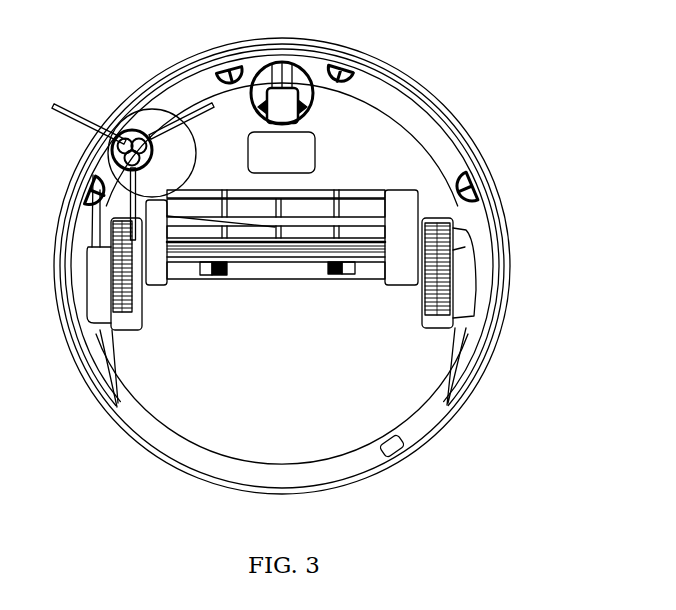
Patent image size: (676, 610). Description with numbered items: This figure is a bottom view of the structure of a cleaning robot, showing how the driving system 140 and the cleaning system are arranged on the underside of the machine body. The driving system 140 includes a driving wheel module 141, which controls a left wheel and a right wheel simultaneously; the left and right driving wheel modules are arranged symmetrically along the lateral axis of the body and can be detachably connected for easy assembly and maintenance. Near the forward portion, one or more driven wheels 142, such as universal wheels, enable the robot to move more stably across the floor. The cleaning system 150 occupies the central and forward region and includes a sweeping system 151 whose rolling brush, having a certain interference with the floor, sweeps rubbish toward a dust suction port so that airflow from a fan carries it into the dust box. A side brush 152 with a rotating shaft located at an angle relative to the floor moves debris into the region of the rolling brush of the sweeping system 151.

The driving system 140 is at (339, 196).
The driving wheel module 141 is at (425, 222).
The driven wheel 142 is at (310, 100).
The cleaning unit 150 is at (235, 176).
The sweeping system 151 is at (250, 215).
The side brush 152 is at (113, 126).